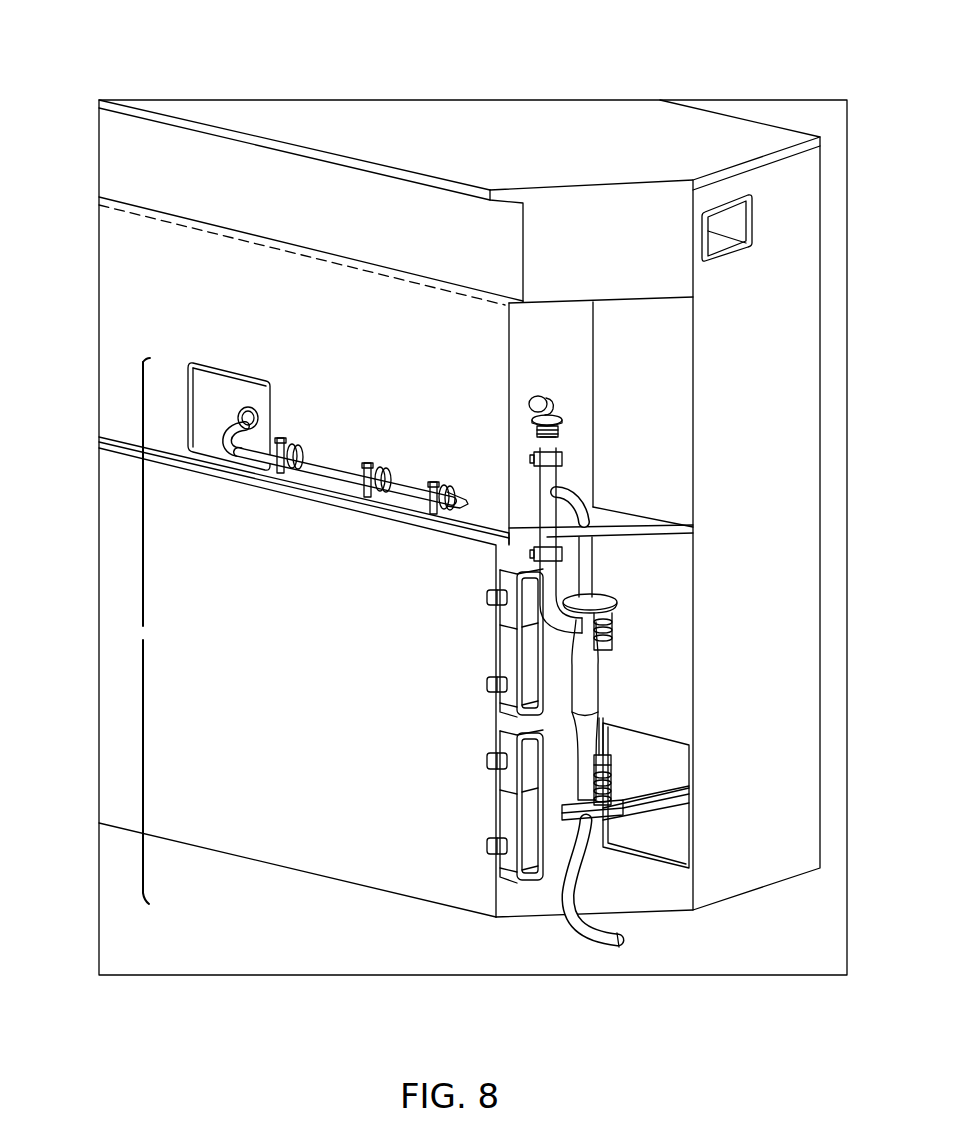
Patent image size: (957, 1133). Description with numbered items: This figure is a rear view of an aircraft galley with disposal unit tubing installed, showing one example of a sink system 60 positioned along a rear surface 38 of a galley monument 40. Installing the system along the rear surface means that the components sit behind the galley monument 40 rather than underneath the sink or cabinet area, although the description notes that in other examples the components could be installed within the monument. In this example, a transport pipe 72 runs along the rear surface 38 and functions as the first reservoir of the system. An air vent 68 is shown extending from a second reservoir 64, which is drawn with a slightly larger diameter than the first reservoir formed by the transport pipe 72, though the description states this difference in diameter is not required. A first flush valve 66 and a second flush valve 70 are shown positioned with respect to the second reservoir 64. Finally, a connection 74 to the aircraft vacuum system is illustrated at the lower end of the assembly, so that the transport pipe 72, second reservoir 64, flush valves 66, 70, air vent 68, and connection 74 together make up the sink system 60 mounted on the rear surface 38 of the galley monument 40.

The galley monument 40 is at (607, 70).
The rear surface 38 is at (231, 308).
The sink system 60 is at (142, 632).
The transport pipe 72 is at (335, 465).
The air vent 68 is at (547, 478).
The first flush valve 66 is at (607, 595).
The second reservoir 64 is at (592, 697).
The second flush valve 70 is at (613, 797).
The connection 74 is at (596, 942).